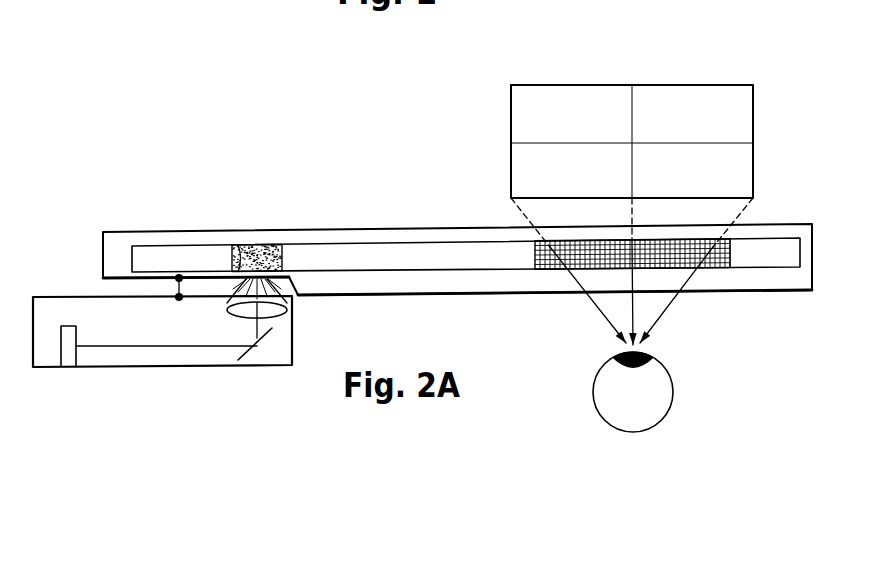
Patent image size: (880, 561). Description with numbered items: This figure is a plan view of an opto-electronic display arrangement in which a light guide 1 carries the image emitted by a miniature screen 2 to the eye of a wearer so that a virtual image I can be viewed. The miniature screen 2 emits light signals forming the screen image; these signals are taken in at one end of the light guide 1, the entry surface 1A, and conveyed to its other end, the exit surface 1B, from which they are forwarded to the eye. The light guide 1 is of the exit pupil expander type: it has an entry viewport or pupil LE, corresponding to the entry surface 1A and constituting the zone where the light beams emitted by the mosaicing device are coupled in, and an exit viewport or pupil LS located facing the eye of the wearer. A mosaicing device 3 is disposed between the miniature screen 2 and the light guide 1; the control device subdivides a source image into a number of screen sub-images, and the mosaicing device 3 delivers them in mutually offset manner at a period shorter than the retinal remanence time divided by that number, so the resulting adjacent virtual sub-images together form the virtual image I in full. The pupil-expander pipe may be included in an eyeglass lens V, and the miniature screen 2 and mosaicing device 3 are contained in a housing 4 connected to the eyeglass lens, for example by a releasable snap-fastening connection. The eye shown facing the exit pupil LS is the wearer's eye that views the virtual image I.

The eyeglass lens V is at (136, 230).
The light guide 1 is at (367, 240).
The entry surface 1A is at (240, 245).
The entry viewport or pupil LE is at (265, 245).
The exit surface 1B is at (705, 268).
The virtual image I is at (685, 90).
The exit viewport or pupil LS is at (577, 257).
The eye of the observer O is at (660, 397).
The housing 4 is at (157, 370).
The miniature screen 2 is at (66, 370).
The mosaicing device 3 is at (273, 332).